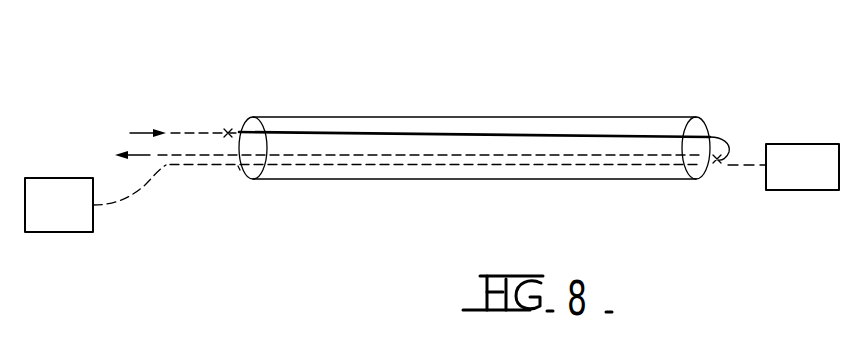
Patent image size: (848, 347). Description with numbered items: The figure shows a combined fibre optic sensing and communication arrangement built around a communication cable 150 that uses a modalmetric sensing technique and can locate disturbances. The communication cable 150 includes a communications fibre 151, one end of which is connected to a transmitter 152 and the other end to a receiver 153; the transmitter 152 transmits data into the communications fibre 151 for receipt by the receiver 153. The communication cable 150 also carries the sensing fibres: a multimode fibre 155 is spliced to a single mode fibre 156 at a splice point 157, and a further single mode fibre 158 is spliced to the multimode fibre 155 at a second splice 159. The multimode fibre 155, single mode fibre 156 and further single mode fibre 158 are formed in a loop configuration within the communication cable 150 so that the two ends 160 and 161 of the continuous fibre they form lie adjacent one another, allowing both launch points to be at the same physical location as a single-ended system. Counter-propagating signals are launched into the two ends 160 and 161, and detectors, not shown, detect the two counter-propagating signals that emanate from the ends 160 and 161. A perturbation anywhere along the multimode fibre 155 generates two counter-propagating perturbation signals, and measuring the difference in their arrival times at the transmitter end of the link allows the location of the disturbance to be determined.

The communication cable 150 is at (365, 112).
The communications fibre 151 is at (238, 166).
The transmitter 152 is at (59, 205).
The receiver 153 is at (783, 167).
The multimode fibre 155 is at (453, 133).
The single mode fibre 156 is at (553, 157).
The splice point 157 is at (726, 160).
The further single mode fibre 158 is at (197, 130).
The splice point 159 is at (230, 120).
The fibre end 160 is at (172, 129).
The fibre end 161 is at (178, 164).